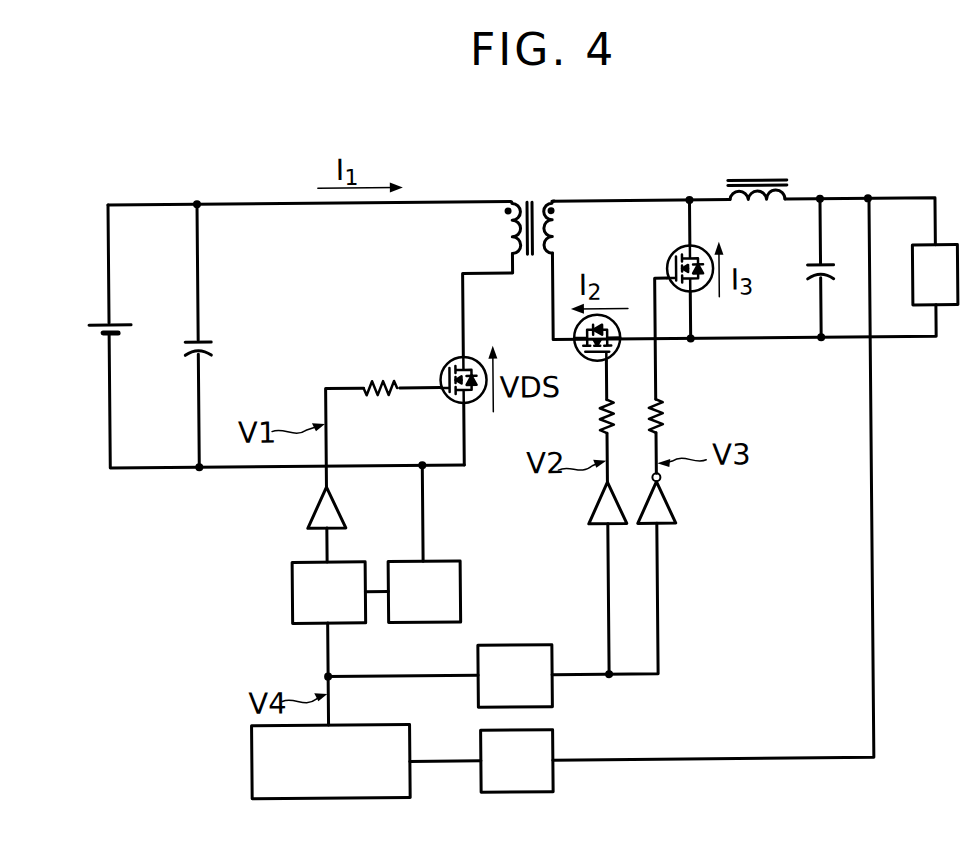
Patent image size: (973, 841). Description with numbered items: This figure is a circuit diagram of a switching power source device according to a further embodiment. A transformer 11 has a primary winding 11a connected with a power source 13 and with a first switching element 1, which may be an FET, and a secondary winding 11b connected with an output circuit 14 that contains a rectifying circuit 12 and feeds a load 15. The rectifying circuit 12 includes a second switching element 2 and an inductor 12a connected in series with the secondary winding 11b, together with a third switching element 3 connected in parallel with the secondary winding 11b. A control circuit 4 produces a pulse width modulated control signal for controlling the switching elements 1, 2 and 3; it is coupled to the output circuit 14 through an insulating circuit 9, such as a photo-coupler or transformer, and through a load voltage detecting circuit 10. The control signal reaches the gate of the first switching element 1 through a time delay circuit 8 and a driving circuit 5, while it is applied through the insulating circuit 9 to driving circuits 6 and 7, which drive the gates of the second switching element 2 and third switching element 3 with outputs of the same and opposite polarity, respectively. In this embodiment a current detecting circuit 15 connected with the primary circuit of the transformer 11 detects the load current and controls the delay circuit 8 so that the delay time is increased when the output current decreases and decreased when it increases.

The switching element 1 is at (439, 380).
The second switching element 2 is at (578, 364).
The third switching element 3 is at (664, 278).
The control circuit 4 is at (331, 761).
The driving circuit 5 is at (327, 497).
The driving circuit 6 is at (602, 517).
The driving circuit 7 is at (656, 515).
The time delay circuit 8 is at (329, 593).
The insulating circuit 9 is at (515, 676).
The load voltage detecting circuit 10 is at (517, 761).
The transformer 11 is at (530, 185).
The primary winding 11a is at (504, 245).
The secondary winding 11b is at (556, 240).
The rectifying circuit 12 is at (707, 154).
The inductor 12a is at (752, 186).
The power source 13 is at (100, 338).
The output circuit 14 is at (840, 197).
The current detecting circuit 15 is at (672, 434).